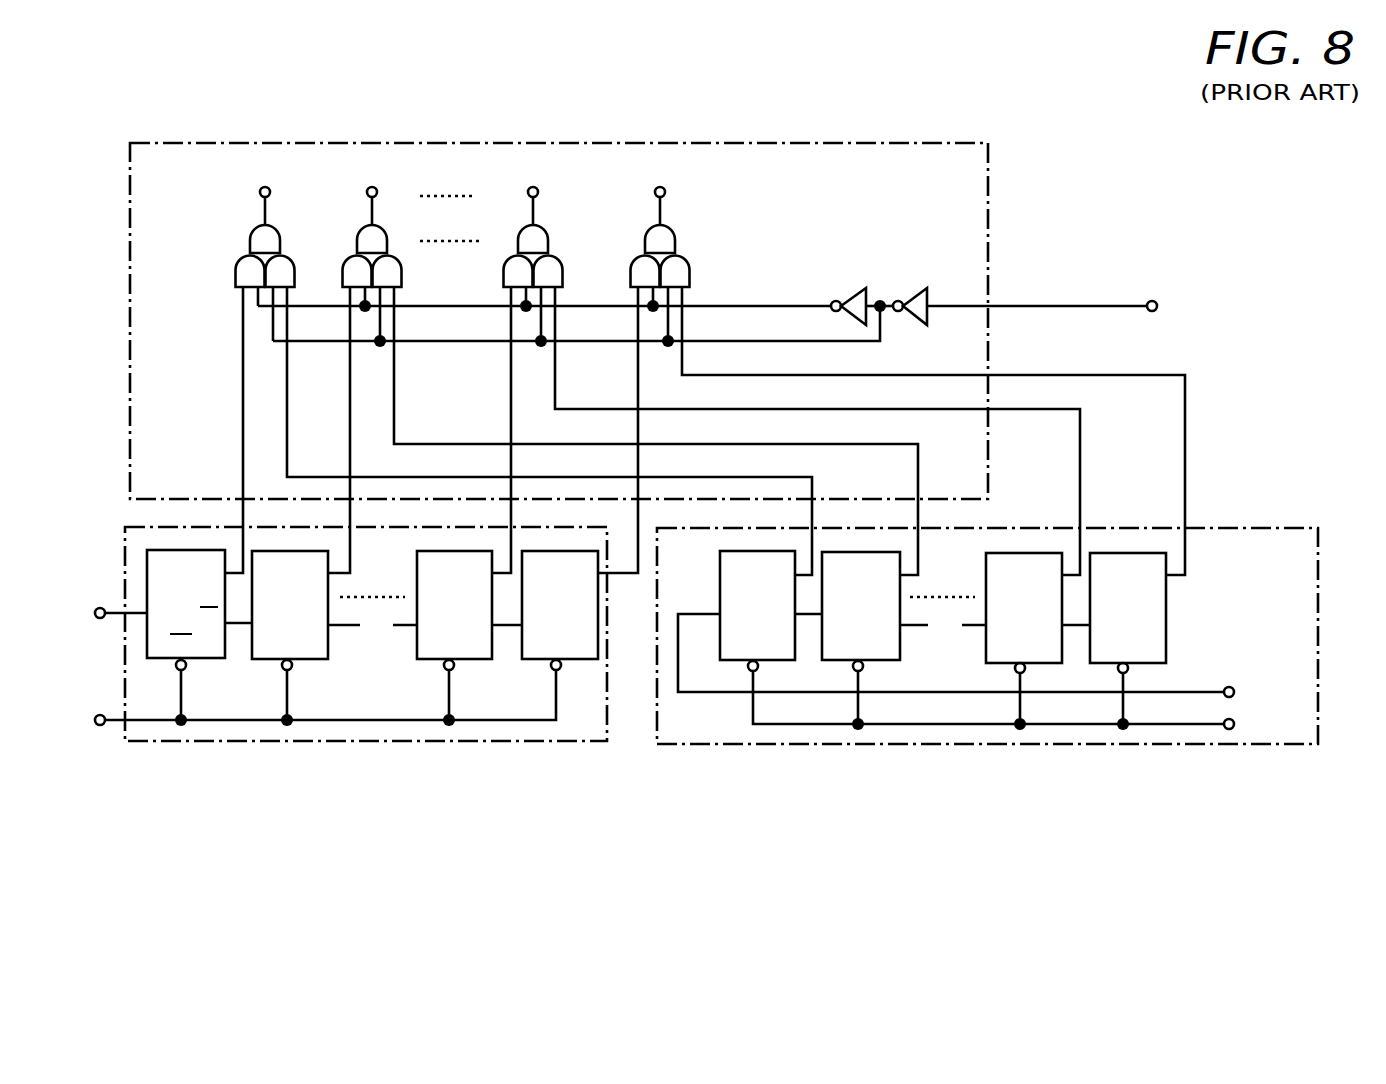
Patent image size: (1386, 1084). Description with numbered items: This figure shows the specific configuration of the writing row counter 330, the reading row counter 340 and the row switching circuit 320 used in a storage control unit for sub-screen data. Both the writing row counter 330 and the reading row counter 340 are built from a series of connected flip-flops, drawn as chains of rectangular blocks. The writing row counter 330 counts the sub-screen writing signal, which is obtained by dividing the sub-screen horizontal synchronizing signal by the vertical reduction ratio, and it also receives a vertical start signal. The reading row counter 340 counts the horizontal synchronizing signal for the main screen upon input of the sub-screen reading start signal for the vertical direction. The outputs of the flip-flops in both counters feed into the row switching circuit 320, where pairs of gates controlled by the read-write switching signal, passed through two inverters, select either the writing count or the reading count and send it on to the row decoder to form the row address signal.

The row switching circuit 320 is at (520, 143).
The writing row counter 330 is at (270, 741).
The reading row counter 340 is at (776, 743).